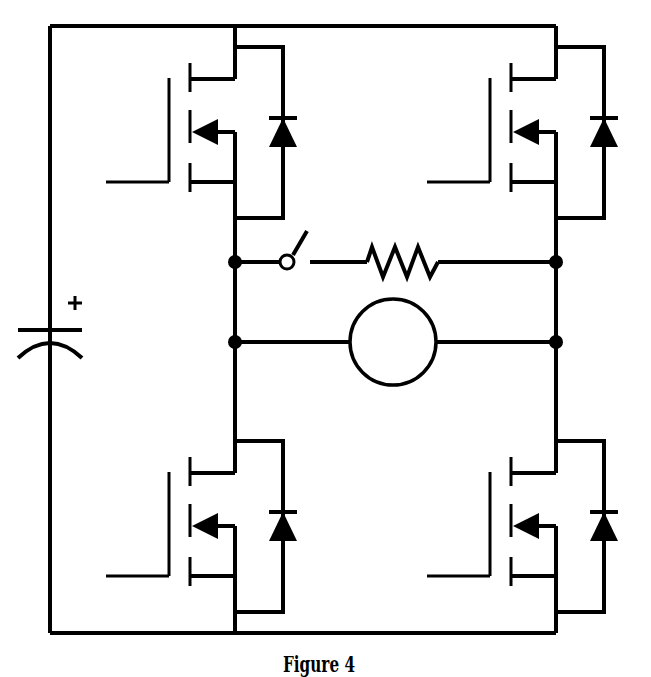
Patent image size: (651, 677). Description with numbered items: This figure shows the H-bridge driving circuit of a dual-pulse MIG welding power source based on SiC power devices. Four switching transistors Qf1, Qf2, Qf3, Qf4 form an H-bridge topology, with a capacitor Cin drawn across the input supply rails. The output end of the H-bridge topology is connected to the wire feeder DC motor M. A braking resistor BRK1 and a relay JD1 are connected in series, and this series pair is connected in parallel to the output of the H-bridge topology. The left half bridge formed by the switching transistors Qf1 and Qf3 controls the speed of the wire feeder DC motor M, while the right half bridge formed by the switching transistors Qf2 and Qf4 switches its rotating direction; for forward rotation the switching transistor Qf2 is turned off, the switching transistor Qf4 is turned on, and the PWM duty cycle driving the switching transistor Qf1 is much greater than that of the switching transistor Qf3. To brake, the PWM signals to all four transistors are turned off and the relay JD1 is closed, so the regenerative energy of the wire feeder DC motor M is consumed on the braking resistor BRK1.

The switching transistor Qf1 is at (196, 132).
The switching transistor Qf2 is at (520, 132).
The switching transistor Qf3 is at (190, 526).
The switching transistor Qf4 is at (514, 526).
The input capacitor Cin is at (91, 341).
The relay JD1 is at (301, 273).
The braking resistor BRK1 is at (436, 256).
The wire feeder DC motor M is at (393, 362).